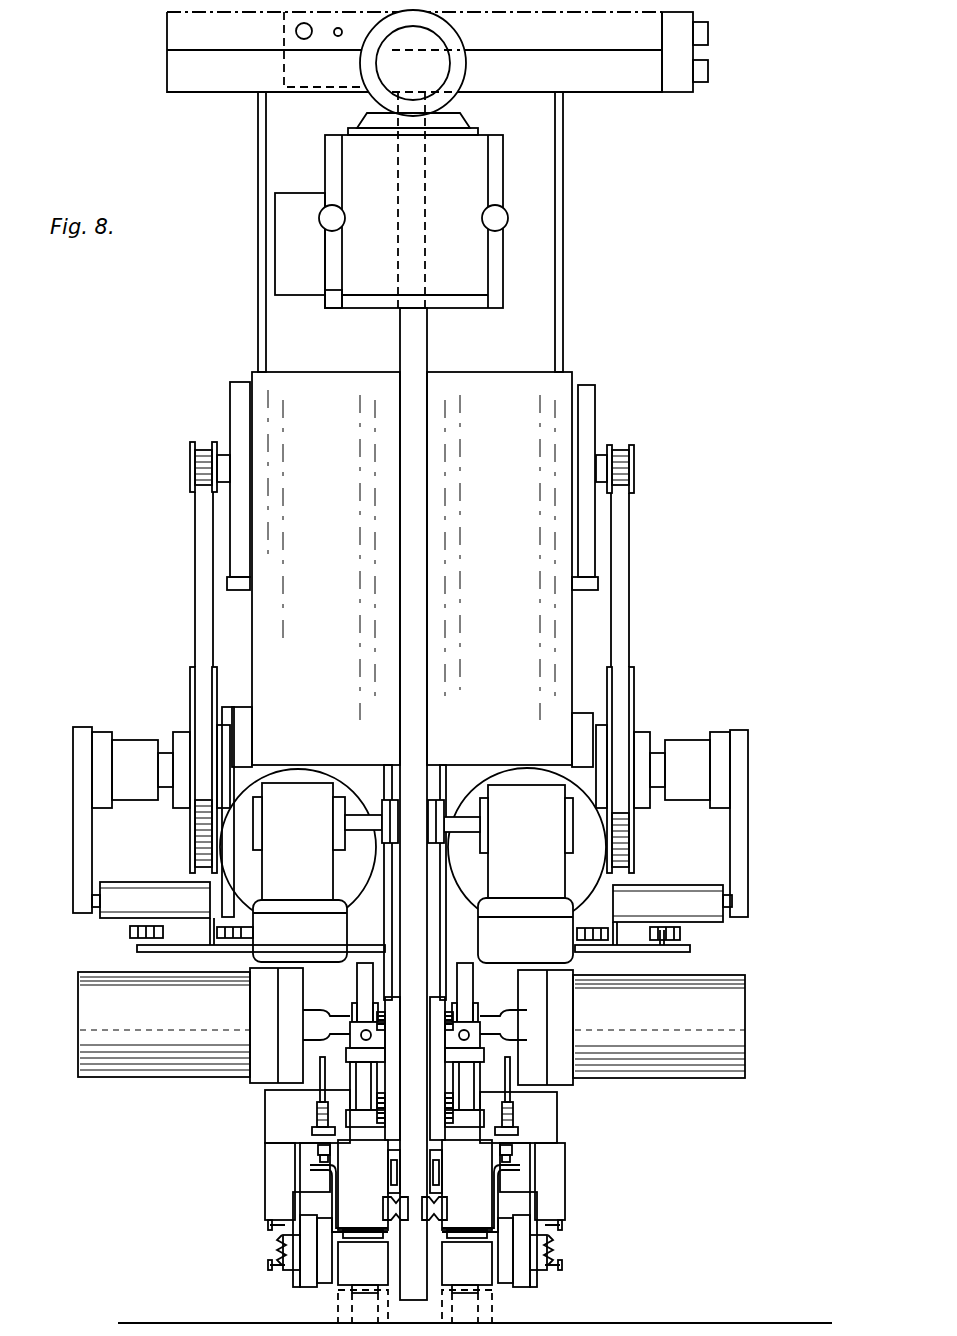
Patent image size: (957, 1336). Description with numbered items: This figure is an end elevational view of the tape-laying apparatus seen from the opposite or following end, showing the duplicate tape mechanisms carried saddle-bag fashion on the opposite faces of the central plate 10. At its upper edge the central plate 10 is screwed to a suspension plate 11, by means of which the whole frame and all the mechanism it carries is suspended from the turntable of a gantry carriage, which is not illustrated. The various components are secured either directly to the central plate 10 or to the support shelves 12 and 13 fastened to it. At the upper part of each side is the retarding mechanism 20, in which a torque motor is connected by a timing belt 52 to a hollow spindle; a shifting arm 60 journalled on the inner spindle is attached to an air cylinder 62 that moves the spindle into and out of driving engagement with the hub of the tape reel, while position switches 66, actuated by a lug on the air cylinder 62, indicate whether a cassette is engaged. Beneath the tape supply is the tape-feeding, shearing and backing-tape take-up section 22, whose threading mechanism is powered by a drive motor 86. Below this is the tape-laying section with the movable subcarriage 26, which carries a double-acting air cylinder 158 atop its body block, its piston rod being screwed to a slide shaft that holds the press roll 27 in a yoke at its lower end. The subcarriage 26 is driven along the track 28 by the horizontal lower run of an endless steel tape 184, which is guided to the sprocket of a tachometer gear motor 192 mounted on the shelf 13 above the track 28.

The central plate 10 is at (422, 342).
The suspension plate 11 is at (620, 90).
The support shelf 12 is at (595, 582).
The support shelf 13 is at (572, 958).
The retarding mechanism 20 is at (648, 716).
The tape-feeding, shearing, and backing-tape take-up section 22 is at (576, 1090).
The subcarriage 26 is at (560, 1172).
The press roll 27 is at (473, 1292).
The track 28 is at (448, 1208).
The timing belt 52 is at (622, 512).
The shifting arm 60 is at (748, 830).
The air cylinder 62 is at (652, 915).
The position switches 66 is at (600, 940).
The drive motor 86 is at (655, 1033).
The double-acting air cylinder 158 is at (473, 1085).
The endless steel tape 184 is at (439, 906).
The tachometer gear motor 192 is at (515, 862).